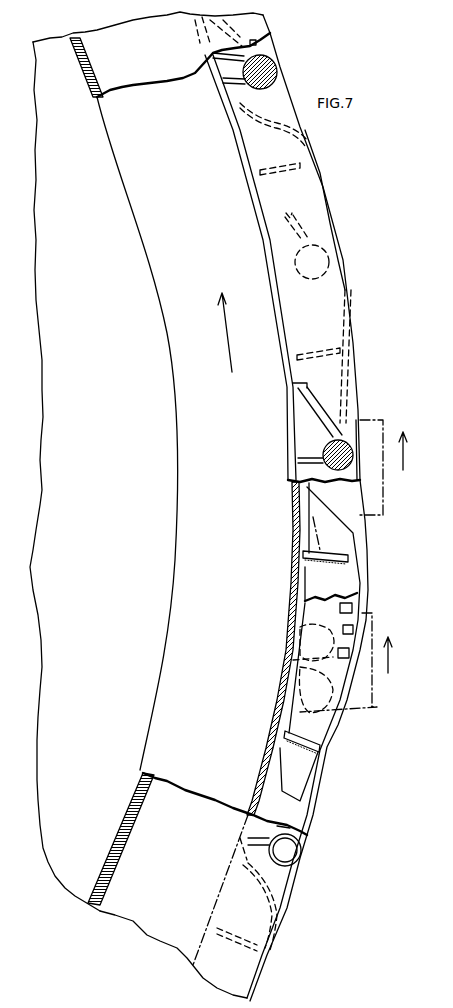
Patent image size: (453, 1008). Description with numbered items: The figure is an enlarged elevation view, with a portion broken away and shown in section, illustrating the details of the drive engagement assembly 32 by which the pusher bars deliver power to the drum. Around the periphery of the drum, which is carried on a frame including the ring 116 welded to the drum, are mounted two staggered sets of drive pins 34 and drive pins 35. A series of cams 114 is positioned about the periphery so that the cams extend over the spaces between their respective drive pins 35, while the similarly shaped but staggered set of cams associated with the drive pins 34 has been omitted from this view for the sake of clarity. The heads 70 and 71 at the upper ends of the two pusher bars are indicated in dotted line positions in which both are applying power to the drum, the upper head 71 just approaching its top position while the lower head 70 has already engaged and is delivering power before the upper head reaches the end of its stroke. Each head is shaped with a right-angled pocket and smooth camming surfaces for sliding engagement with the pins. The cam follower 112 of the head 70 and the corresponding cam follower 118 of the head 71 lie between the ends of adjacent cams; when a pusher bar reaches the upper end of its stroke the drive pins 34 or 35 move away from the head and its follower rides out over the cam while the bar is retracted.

The drive engagement assembly 32 is at (395, 1005).
The drive pin 34 is at (320, 248).
The drive pin 35 is at (274, 64).
The head 70 is at (380, 695).
The head 71 is at (388, 497).
The cam follower 112 is at (305, 623).
The cam 114 is at (320, 160).
The ring 116 is at (183, 395).
The cam follower 118 is at (308, 436).